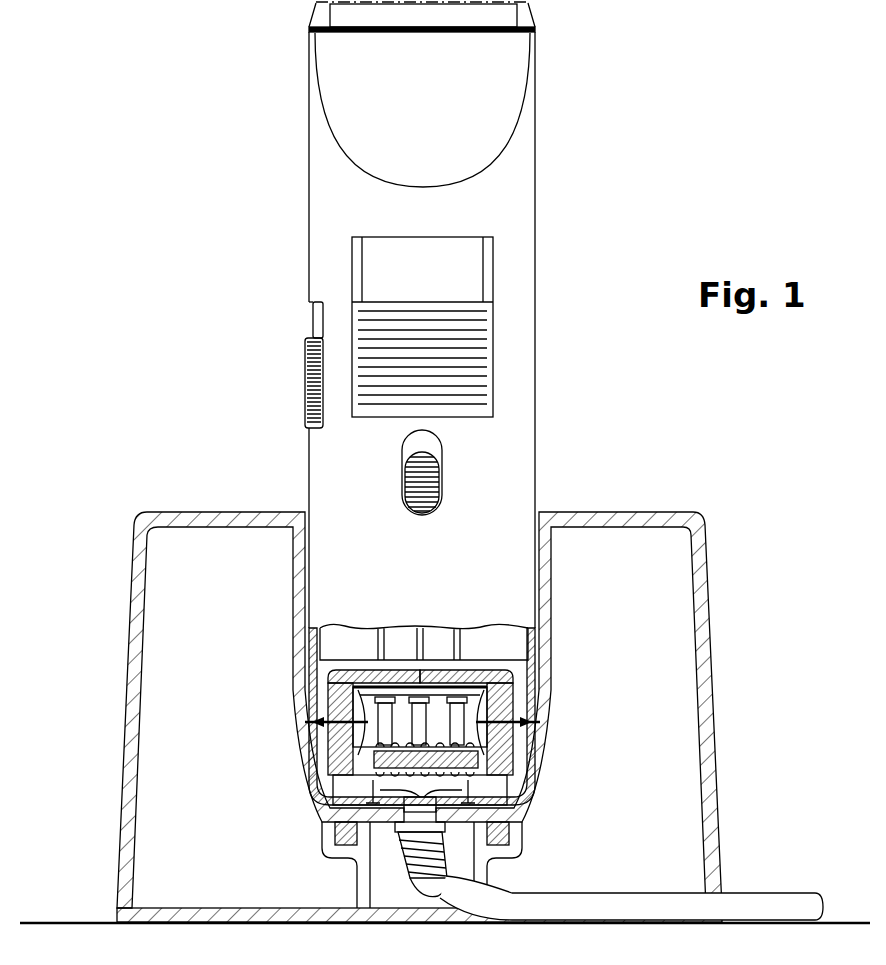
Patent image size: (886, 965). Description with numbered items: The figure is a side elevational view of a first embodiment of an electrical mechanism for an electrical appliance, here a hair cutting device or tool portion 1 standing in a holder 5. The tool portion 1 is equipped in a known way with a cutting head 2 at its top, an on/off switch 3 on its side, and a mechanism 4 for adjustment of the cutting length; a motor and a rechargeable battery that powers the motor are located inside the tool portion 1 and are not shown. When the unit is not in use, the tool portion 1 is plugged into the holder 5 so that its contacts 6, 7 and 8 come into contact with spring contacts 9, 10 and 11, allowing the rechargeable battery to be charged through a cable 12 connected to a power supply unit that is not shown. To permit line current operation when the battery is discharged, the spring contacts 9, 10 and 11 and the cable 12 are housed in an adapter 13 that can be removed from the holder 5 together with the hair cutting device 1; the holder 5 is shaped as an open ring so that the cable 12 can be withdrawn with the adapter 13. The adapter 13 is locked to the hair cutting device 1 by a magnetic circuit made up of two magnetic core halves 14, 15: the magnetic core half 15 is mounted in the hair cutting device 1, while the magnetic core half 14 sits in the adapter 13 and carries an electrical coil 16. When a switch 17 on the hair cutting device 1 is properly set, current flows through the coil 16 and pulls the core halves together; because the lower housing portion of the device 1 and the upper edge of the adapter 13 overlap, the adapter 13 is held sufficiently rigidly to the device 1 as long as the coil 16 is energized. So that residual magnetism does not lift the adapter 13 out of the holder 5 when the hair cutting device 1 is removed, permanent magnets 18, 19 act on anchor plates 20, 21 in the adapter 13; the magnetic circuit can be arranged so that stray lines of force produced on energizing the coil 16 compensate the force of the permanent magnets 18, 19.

The hair cutting device 1 is at (515, 203).
The cutting head 2 is at (503, 15).
The on/off switch 3 is at (303, 377).
The mechanism for adjustment of the cutting length 4 is at (490, 378).
The holder 5 is at (703, 612).
The contact 6 is at (383, 698).
The contact 7 is at (412, 698).
The contact 8 is at (477, 698).
The spring contact 9 is at (333, 690).
The spring contact 10 is at (515, 690).
The spring contact 11 is at (540, 711).
The cable 12 is at (762, 912).
The adapter 13 is at (530, 740).
The magnetic core half 14 is at (330, 740).
The magnetic core half 15 is at (312, 712).
The electrical coil 16 is at (368, 764).
The switch 17 is at (428, 487).
The permanent magnet 18 is at (336, 830).
The permanent magnet 19 is at (512, 840).
The anchor plate 20 is at (372, 812).
The anchor plate 21 is at (535, 812).